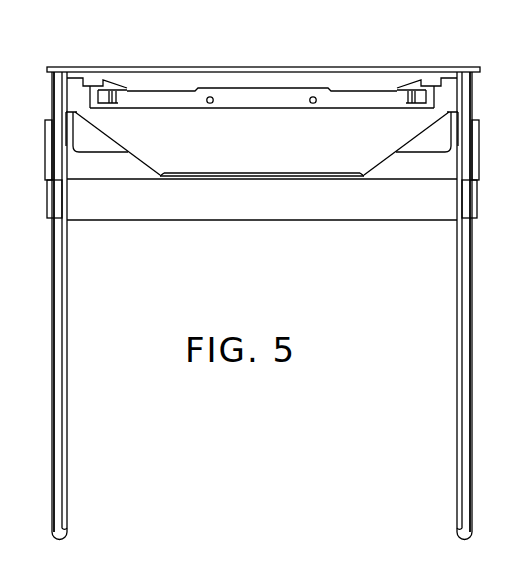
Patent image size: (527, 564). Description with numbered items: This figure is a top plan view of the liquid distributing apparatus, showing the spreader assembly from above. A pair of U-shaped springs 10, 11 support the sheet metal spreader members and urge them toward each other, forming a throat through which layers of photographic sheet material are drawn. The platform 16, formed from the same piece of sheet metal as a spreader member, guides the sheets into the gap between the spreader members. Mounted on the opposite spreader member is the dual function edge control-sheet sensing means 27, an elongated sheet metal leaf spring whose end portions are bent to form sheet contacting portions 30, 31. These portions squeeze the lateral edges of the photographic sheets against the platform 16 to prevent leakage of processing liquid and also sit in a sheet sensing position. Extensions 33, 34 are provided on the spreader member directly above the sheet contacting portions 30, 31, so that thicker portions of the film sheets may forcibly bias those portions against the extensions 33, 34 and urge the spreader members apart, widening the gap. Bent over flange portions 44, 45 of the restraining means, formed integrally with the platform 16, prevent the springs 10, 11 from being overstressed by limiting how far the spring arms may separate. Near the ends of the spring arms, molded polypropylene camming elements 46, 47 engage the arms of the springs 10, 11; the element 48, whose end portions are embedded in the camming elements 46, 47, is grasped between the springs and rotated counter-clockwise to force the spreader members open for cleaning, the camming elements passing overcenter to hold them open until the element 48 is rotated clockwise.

The U-shaped spring 10 is at (462, 423).
The U-shaped spring 11 is at (67, 388).
The platform 16 is at (263, 147).
The edge control-sheet sensing means 27 is at (270, 97).
The sheet contacting portion 30 is at (98, 97).
The sheet contacting portion 31 is at (428, 98).
The extension 33 is at (93, 82).
The extension 34 is at (430, 82).
The bent over flange portion 44 is at (473, 193).
The bent over flange portion 45 is at (55, 200).
The camming element 46 is at (452, 122).
The camming element 47 is at (70, 122).
The element 48 is at (118, 167).